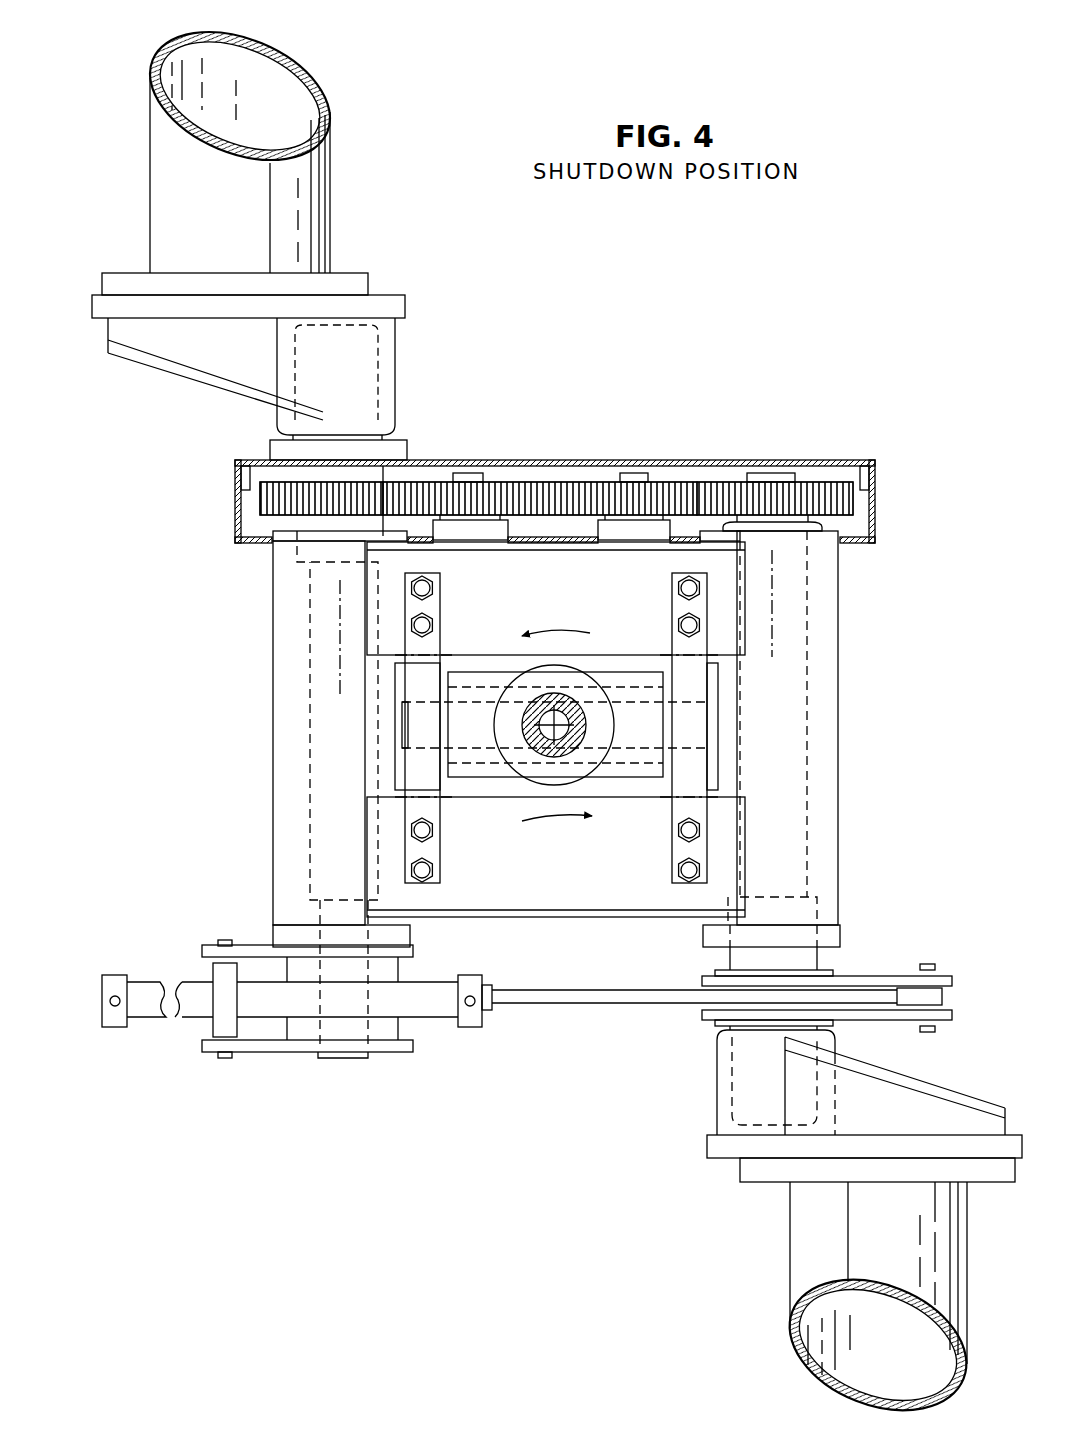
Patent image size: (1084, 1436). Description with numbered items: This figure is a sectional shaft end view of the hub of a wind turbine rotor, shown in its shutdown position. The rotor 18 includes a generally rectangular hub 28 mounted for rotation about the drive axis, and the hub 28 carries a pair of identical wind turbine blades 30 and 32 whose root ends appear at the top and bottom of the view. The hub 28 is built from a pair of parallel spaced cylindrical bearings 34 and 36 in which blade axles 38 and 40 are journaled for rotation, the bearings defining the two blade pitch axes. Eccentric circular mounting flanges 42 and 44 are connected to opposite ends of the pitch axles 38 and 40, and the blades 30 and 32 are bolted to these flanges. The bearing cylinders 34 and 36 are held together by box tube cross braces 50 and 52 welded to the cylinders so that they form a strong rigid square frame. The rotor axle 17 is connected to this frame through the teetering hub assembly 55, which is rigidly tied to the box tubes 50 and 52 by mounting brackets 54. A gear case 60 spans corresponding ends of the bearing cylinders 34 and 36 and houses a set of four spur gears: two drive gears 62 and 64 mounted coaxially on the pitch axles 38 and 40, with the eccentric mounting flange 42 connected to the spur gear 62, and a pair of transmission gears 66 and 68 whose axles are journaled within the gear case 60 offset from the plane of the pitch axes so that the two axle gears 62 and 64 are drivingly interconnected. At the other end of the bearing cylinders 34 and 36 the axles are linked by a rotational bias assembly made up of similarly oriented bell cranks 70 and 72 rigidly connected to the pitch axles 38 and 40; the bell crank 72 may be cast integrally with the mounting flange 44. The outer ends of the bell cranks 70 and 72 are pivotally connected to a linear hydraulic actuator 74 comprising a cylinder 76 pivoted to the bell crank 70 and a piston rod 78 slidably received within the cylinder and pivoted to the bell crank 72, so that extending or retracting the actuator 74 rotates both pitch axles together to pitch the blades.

The rotor axle 17 is at (517, 726).
The rotor 18 is at (706, 380).
The hub 28 is at (258, 815).
The wind turbine blade 30 is at (291, 216).
The wind turbine blade 32 is at (808, 1278).
The cylindrical bearing 34 is at (288, 777).
The cylindrical bearing 36 is at (838, 778).
The blade axle 38 is at (305, 880).
The blade axle 40 is at (808, 875).
The eccentric circular mounting flange 42 is at (405, 310).
The eccentric circular mounting flange 44 is at (708, 1152).
The box tube cross brace 50 is at (567, 870).
The box tube cross brace 52 is at (567, 615).
The mounting brackets 54 is at (437, 818).
The teetering hub assembly 55 is at (610, 668).
The gear case 60 is at (877, 526).
The drive gear 62 is at (258, 500).
The drive gear 64 is at (860, 492).
The transmission gear 66 is at (672, 482).
The transmission gear 68 is at (495, 482).
The bell crank 70 is at (272, 1055).
The bell crank 72 is at (882, 1025).
The linear hydraulic actuator 74 is at (441, 1024).
The cylinder 76 is at (428, 985).
The piston rod 78 is at (585, 990).